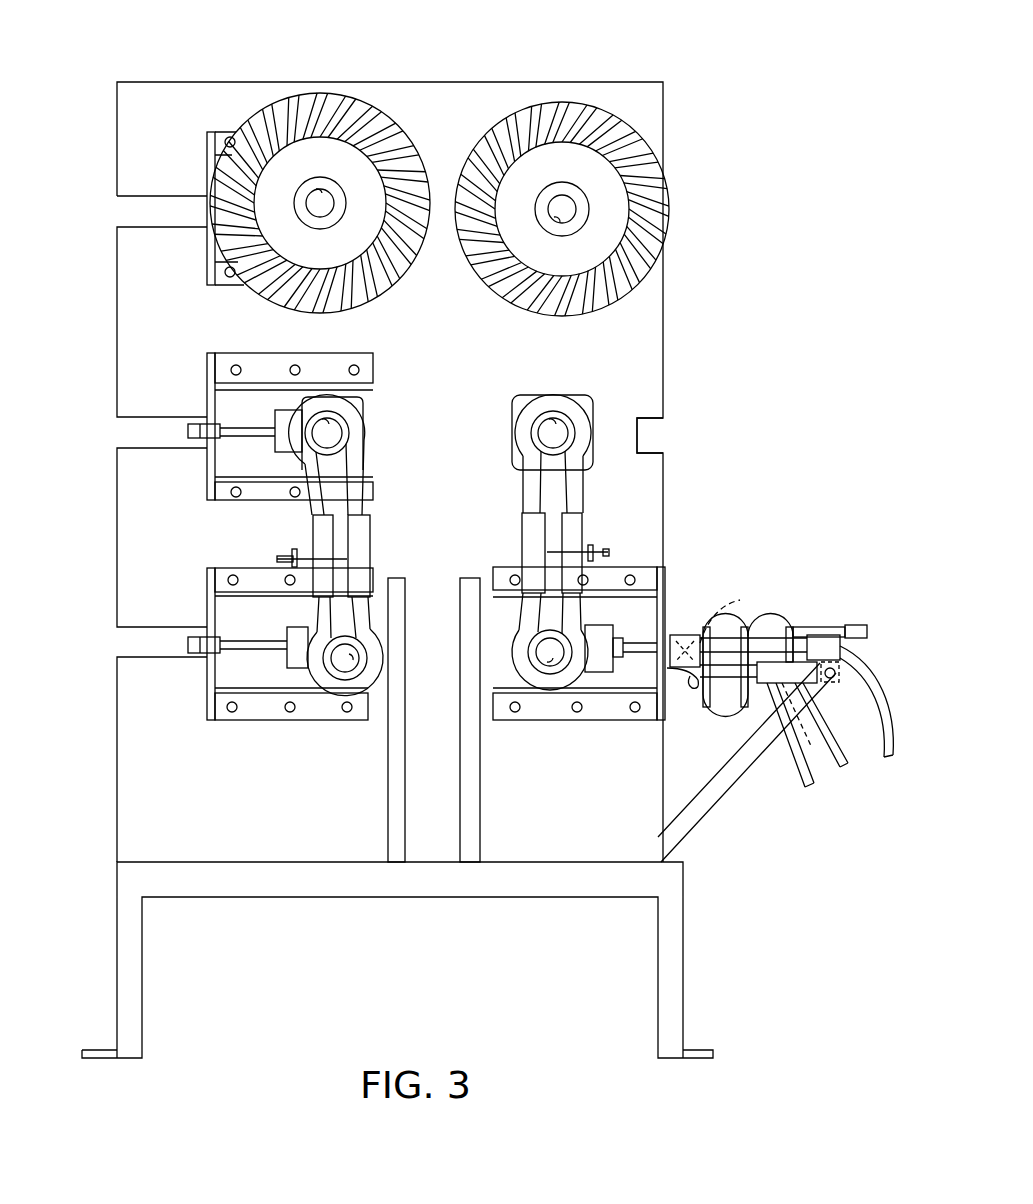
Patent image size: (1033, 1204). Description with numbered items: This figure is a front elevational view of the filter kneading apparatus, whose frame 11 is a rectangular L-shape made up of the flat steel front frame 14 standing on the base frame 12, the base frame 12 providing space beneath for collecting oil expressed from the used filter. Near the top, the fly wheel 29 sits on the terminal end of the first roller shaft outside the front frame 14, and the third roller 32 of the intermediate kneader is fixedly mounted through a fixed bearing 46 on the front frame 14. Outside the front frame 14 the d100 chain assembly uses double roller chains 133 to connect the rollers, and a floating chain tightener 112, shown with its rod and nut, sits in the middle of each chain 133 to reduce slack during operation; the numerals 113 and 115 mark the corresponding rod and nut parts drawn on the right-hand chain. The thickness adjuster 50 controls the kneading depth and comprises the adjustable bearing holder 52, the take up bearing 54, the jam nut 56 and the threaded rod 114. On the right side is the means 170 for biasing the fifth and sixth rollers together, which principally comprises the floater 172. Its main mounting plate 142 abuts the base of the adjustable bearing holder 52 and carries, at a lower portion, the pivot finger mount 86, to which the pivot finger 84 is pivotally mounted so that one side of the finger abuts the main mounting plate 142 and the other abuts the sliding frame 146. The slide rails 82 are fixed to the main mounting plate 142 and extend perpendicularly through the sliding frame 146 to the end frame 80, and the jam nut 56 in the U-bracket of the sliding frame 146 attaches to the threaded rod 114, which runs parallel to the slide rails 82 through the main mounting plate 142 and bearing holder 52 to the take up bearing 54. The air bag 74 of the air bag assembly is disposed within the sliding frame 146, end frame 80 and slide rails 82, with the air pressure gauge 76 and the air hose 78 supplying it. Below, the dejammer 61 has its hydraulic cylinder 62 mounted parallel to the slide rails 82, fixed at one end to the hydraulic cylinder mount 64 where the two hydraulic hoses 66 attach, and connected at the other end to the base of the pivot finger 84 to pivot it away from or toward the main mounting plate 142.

The frame 11 is at (391, 553).
The base frame 12 is at (675, 950).
The front frame 14 is at (445, 95).
The fly wheel 29 is at (562, 155).
The third roller 32 is at (640, 433).
The fixed bearing 46 is at (575, 405).
The thickness adjuster 50 is at (202, 578).
The adjustable bearing holder 52 is at (218, 130).
The take up bearing 54 is at (283, 445).
The jam nut 56 is at (190, 428).
The dejammer 61 is at (828, 738).
The hydraulic cylinder 62 is at (812, 772).
The hydraulic cylinder mount 64 is at (830, 679).
The hydraulic hose 66 is at (797, 770).
The air bag 74 is at (773, 620).
The air pressure gauge 76 is at (855, 625).
The air hose 78 is at (893, 725).
The end frame 80 is at (828, 650).
The slide rail 82 is at (780, 645).
The pivot finger 84 is at (736, 614).
The pivot finger mount 86 is at (680, 690).
The floating chain tightener 112 is at (320, 538).
The tensioner cylinder 113 is at (572, 550).
The threaded rod 114 is at (248, 653).
The adjusting bolt 115 is at (596, 553).
The double roller chain 133 is at (328, 678).
The main mounting plate 142 is at (683, 632).
The sliding frame 146 is at (697, 643).
The means for biasing together the fifth roller to the sixth roller 170 is at (787, 668).
The floater 172 is at (780, 823).